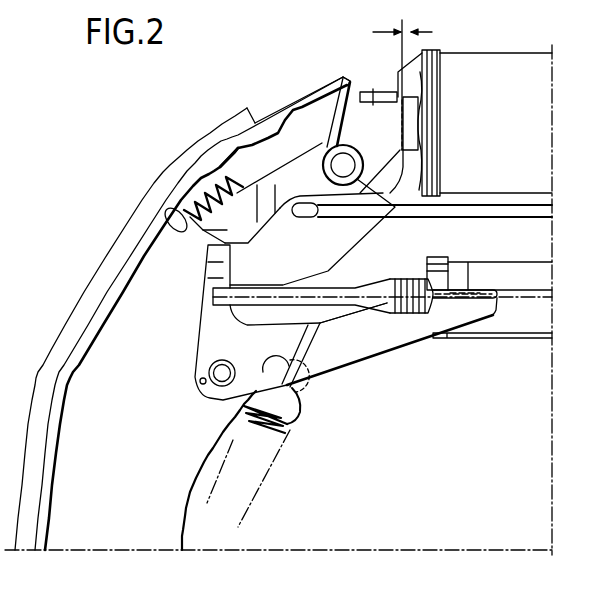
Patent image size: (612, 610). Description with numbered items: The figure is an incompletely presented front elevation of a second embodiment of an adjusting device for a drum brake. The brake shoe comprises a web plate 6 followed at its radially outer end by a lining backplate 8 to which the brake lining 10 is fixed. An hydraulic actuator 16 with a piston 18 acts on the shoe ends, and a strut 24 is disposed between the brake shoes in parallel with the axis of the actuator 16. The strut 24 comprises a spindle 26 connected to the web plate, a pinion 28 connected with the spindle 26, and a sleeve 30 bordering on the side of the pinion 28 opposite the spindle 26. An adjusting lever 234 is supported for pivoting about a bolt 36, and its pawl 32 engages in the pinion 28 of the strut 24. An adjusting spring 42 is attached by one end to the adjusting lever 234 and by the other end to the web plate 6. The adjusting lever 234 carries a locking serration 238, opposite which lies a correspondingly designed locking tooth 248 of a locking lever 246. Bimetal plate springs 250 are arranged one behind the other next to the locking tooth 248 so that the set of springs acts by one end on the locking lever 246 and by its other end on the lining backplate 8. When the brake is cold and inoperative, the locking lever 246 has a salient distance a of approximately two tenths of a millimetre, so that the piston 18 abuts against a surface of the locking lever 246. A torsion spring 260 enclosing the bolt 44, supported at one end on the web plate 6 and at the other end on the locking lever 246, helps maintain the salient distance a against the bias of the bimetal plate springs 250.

The web plate 6 is at (118, 518).
The lining backplate 8 is at (58, 407).
The brake lining 10 is at (72, 338).
The hydraulic actuator 16 is at (495, 72).
The piston 18 is at (402, 97).
The strut 24 is at (492, 343).
The spindle 26 is at (503, 266).
The pinion 28 is at (442, 257).
The sleeve 30 is at (203, 297).
The pawl 32 is at (493, 290).
The bolt 36 is at (200, 382).
The adjusting spring 42 is at (277, 433).
The bolt 44 is at (338, 163).
The adjusting lever 234 is at (350, 347).
The locking serration 238 is at (205, 255).
The locking lever 246 is at (298, 175).
The locking tooth 248 is at (187, 222).
The bimetal plate springs 250 is at (220, 165).
The torsion spring 260 is at (348, 76).
The salient distance a is at (402, 76).